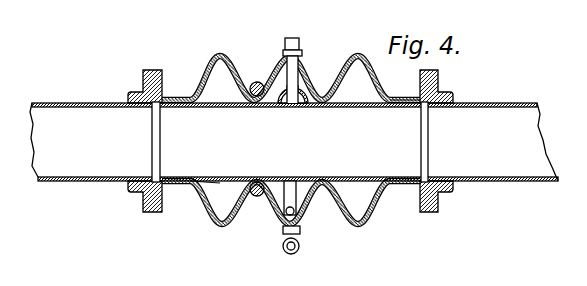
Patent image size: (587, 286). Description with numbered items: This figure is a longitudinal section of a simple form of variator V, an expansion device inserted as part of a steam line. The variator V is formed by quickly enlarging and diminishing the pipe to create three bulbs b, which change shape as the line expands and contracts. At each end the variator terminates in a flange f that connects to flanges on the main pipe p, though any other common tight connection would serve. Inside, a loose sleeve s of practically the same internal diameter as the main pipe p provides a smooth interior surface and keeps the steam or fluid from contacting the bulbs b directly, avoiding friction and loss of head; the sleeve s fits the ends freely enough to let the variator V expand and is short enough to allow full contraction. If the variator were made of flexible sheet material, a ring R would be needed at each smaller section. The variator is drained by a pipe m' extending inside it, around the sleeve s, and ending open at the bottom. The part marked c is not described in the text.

The main pipe p is at (294, 142).
The flange f is at (290, 138).
The bulb b is at (291, 140).
The sleeve s is at (305, 138).
The ring R is at (256, 131).
The variator V is at (301, 126).
The dome cap at valve base c is at (293, 92).
The drain pipe m' is at (300, 141).